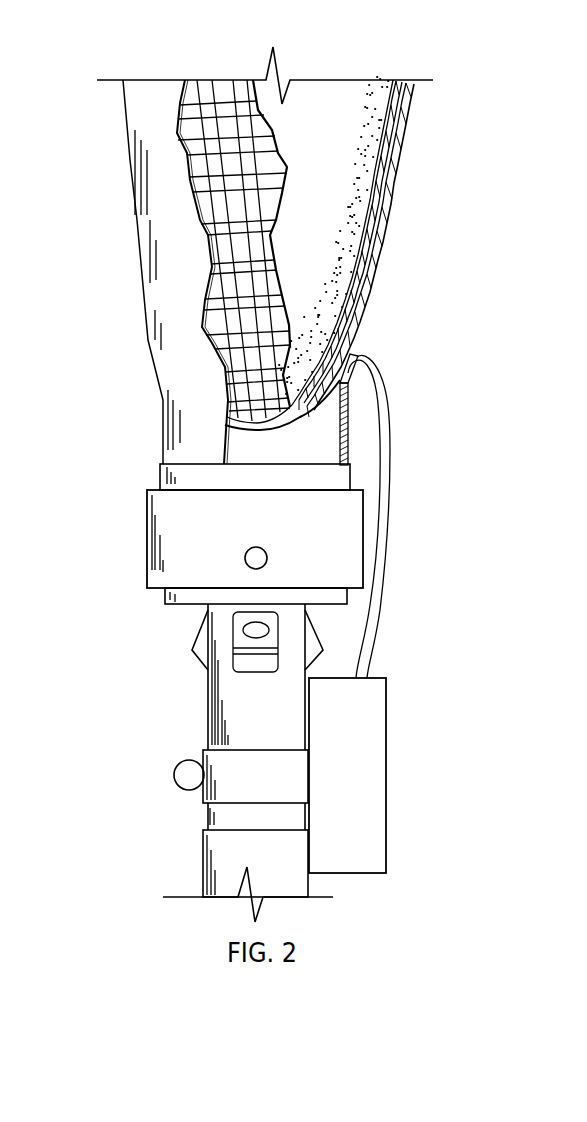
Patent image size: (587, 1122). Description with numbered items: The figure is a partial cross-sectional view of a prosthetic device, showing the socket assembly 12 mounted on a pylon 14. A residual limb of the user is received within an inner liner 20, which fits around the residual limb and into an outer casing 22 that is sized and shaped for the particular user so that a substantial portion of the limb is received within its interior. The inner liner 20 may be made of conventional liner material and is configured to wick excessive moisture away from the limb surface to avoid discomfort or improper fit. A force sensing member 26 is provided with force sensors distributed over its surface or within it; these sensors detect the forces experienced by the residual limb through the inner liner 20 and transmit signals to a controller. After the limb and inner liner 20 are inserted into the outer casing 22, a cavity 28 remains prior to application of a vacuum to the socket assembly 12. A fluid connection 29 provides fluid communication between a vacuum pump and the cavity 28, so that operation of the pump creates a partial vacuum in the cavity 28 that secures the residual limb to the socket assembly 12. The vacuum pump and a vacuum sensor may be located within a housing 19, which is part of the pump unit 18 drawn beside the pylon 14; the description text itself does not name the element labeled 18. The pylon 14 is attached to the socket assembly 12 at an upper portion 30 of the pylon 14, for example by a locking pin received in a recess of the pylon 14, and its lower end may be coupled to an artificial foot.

The socket assembly 12 is at (446, 179).
The pylon 14 is at (228, 708).
The vacuum pump assembly 18 is at (388, 748).
The housing 19 is at (375, 760).
The inner liner 20 is at (348, 92).
The outer casing 22 is at (386, 246).
The force sensing member 26 is at (222, 92).
The cavity 28 is at (340, 387).
The fluid connection 29 is at (381, 460).
The upper portion 30 is at (114, 547).